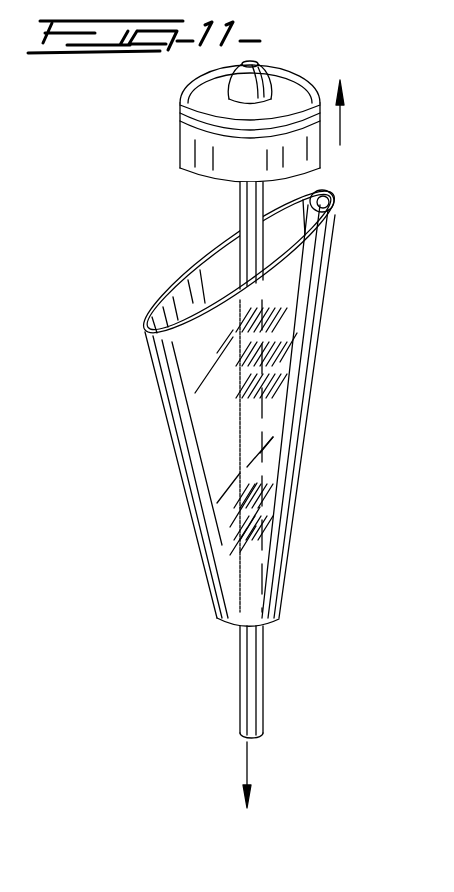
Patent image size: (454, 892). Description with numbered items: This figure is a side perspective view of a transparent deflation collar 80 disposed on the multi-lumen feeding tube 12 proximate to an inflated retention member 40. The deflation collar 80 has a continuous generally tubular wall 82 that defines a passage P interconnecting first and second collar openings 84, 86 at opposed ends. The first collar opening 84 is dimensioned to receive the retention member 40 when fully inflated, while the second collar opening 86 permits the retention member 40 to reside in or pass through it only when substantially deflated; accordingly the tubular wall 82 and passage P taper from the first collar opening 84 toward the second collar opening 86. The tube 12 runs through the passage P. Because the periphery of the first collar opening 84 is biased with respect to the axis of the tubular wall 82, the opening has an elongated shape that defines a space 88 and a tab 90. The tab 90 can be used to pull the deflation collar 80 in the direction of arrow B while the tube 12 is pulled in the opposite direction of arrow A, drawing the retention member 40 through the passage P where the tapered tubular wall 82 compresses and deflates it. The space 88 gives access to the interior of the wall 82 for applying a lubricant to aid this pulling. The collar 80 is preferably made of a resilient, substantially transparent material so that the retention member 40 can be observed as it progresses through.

The retention member 40 is at (300, 80).
The tube 12 is at (238, 680).
The deflation collar 80 is at (157, 434).
The tubular wall 82 is at (323, 298).
The first collar opening 84 is at (218, 263).
The second collar opening 86 is at (228, 622).
The space 88 is at (177, 312).
The tab 90 is at (313, 187).
The passage P is at (210, 437).
The arrow A is at (255, 775).
The arrow B is at (347, 112).